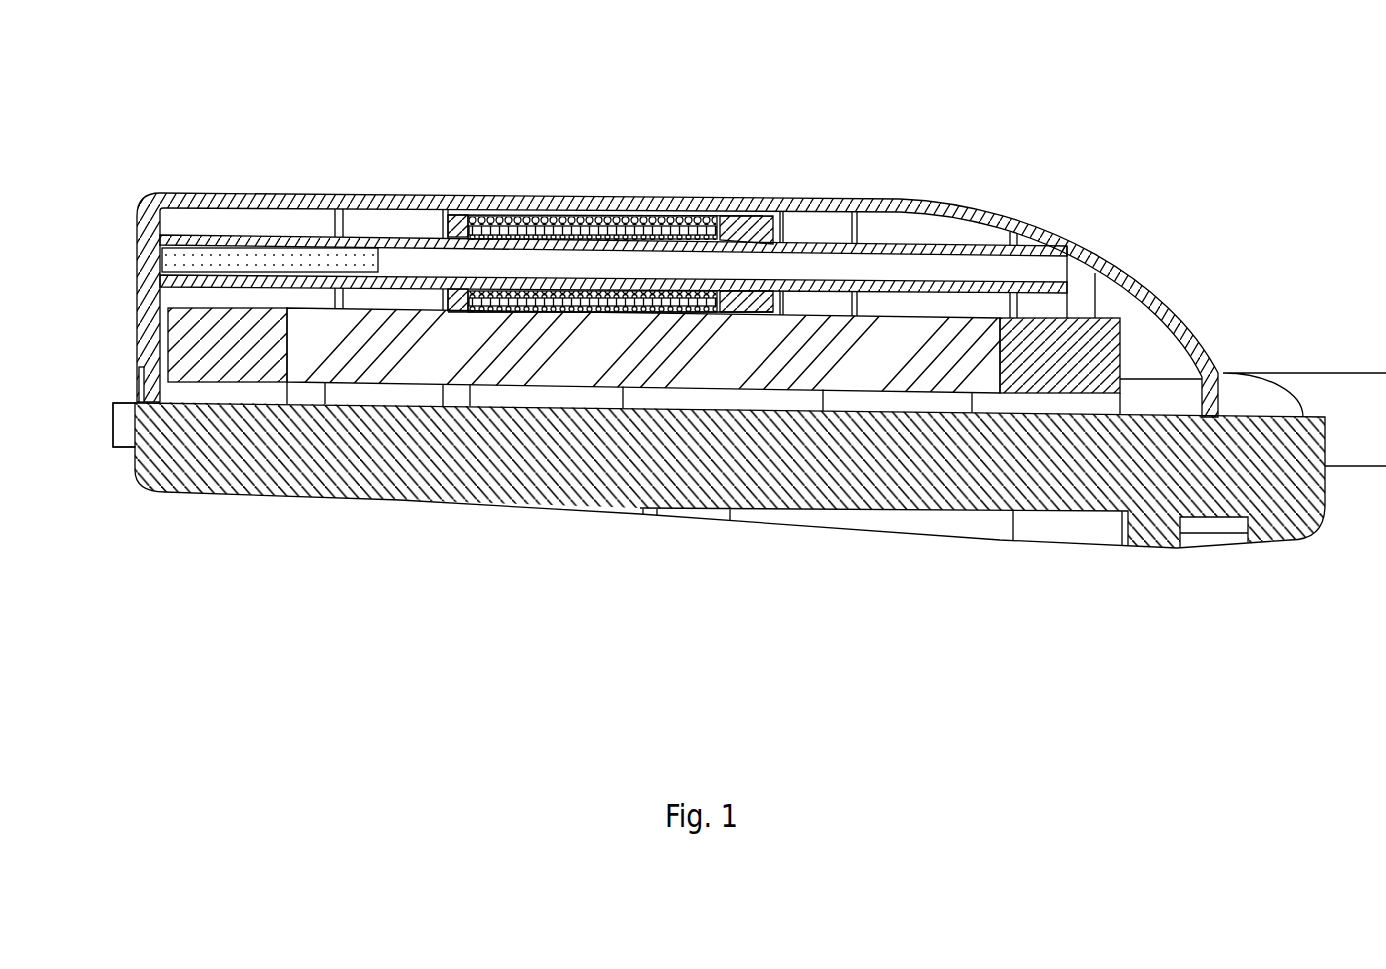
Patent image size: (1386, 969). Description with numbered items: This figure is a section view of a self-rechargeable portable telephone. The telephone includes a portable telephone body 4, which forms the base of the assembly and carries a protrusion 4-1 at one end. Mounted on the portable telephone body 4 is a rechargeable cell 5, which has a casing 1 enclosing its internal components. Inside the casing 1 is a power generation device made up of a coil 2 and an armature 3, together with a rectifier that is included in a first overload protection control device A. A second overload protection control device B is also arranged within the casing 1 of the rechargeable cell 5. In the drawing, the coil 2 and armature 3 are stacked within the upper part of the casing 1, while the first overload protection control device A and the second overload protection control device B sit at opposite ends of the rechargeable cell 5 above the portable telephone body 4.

The casing 1 is at (677, 238).
The coil 2 is at (686, 184).
The armature 3 is at (227, 204).
The portable telephone body 4 is at (719, 516).
The base protrusion 4-1 is at (131, 504).
The rechargeable cell 5 is at (662, 469).
The first overload protection control device A is at (272, 469).
The second overload protection control device B is at (1145, 483).